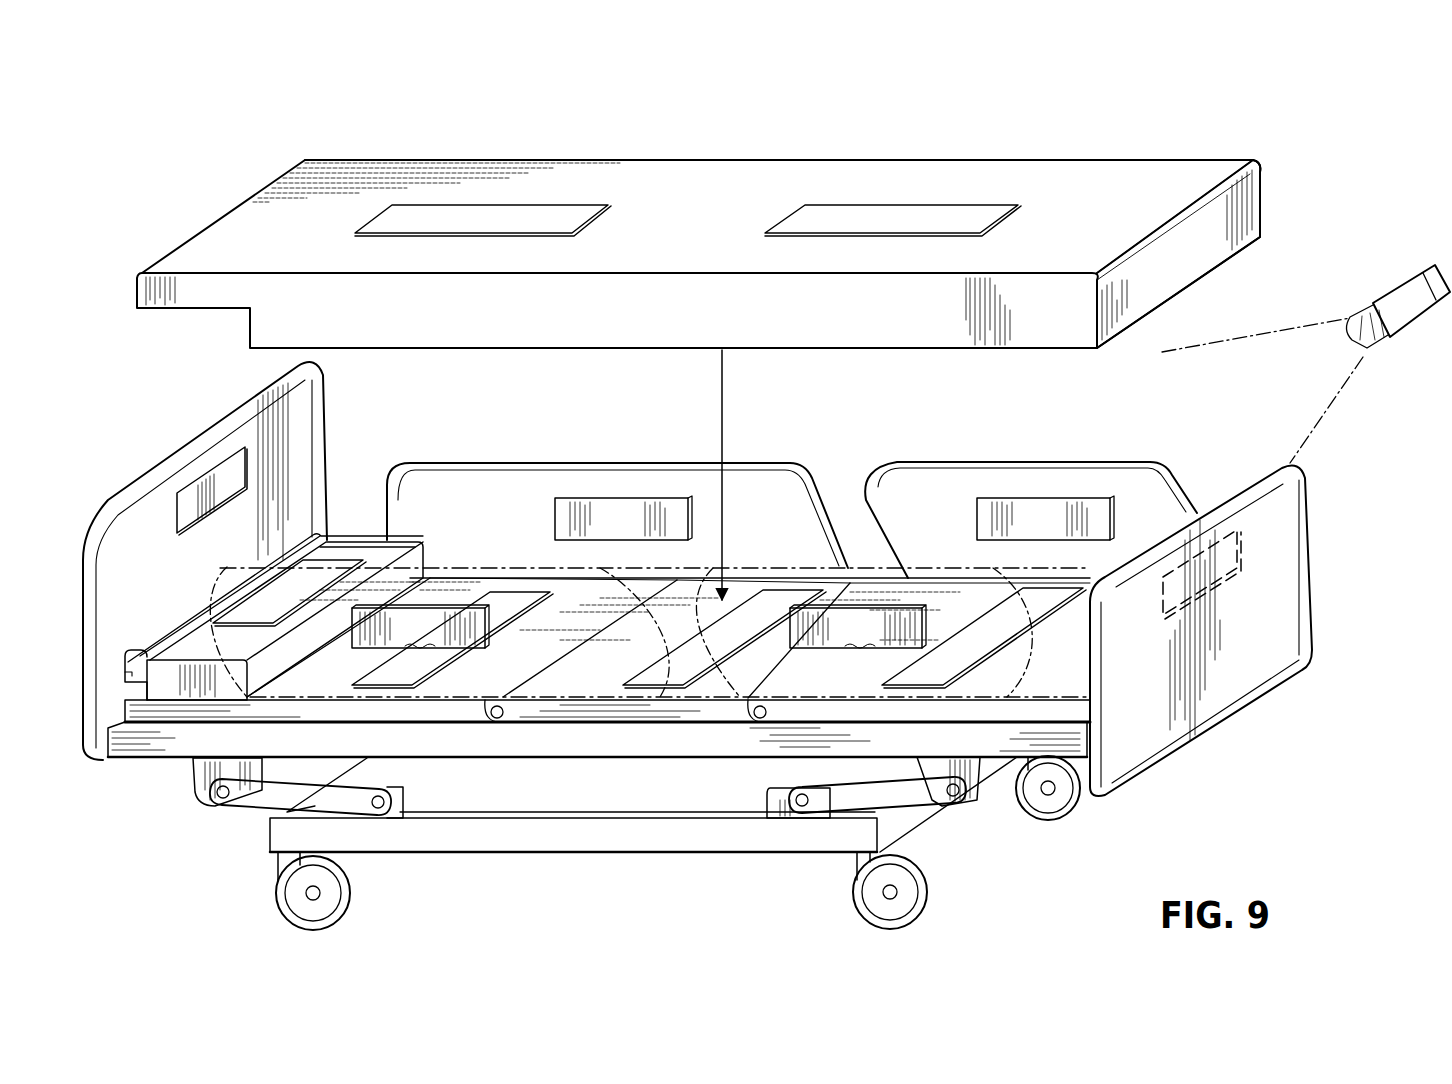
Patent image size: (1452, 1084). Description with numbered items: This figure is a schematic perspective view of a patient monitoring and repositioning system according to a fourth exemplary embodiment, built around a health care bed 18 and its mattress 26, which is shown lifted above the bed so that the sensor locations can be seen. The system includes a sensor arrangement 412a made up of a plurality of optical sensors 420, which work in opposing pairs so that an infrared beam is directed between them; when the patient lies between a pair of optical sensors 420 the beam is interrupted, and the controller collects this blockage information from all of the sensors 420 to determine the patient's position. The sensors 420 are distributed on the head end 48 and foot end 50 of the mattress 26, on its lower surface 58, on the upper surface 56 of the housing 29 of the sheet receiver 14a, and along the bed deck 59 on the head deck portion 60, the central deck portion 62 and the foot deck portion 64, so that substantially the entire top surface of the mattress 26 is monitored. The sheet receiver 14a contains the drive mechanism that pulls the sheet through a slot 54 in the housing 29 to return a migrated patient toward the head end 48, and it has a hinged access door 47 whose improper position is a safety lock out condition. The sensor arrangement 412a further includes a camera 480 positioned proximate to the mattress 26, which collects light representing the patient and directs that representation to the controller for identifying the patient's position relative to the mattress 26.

The head end 48 is at (283, 143).
The mattress 26 is at (706, 173).
The foot end 50 is at (1231, 148).
The lower surface 58 is at (655, 350).
The camera 480 is at (1405, 282).
The sensor arrangement 412a is at (1247, 316).
The upper surface 56 is at (352, 543).
The hinged access door 47 is at (388, 540).
The housing 29 is at (432, 558).
The sheet receiver 14a is at (187, 602).
The slot 54 is at (110, 650).
The optical sensor 420 is at (495, 213).
The health care bed 18 is at (1015, 863).
The head deck portion 60 is at (424, 712).
The bed deck 59 is at (563, 705).
The central deck portion 62 is at (620, 715).
The foot deck portion 64 is at (795, 713).